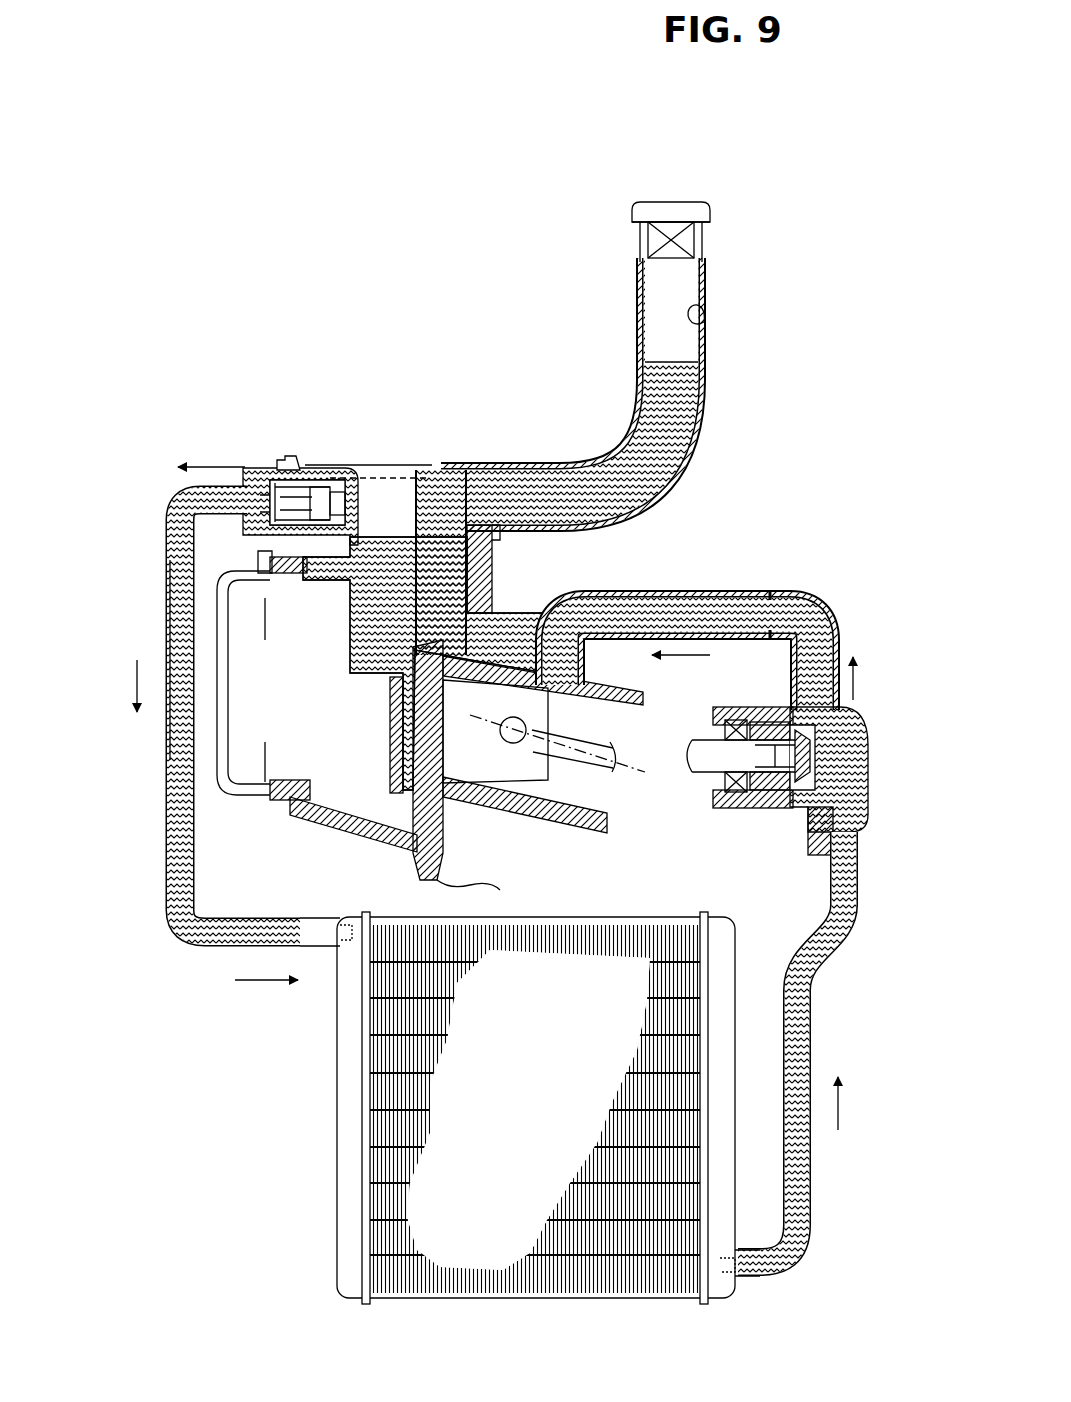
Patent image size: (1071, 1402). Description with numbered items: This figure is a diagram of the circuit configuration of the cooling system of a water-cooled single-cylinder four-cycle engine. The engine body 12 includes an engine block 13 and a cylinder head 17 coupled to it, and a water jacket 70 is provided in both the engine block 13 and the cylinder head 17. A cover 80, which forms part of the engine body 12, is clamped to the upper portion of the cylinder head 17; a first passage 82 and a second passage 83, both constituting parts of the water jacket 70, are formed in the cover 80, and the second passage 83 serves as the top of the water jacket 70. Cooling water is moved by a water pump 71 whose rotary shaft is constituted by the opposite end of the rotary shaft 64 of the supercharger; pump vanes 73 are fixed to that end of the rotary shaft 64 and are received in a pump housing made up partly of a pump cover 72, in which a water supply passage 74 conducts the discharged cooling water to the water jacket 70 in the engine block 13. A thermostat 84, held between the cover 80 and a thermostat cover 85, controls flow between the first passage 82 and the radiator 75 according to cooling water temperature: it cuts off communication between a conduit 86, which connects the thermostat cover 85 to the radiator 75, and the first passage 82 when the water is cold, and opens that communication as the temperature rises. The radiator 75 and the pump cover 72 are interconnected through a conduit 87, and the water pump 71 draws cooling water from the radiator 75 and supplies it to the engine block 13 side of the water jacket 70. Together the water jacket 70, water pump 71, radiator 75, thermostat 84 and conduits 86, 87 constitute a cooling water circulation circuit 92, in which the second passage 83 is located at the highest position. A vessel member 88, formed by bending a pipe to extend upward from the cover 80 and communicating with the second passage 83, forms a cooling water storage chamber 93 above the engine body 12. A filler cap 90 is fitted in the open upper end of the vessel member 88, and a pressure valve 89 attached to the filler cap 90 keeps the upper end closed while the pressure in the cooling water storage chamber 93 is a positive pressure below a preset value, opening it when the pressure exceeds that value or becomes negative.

The engine body 12 is at (306, 806).
The engine block 13 is at (432, 870).
The cylinder head 17 is at (335, 816).
The rotary shaft 64 is at (712, 766).
The water jacket 70 is at (388, 668).
The water pump 71 is at (862, 730).
The pump cover 72 is at (816, 614).
The pump vanes 73 is at (832, 806).
The water supply passage 74 is at (822, 644).
The radiator 75 is at (546, 1122).
The cover 80 is at (383, 493).
The first passage 82 is at (346, 578).
The second passage 83 is at (440, 497).
The thermostat 84 is at (296, 470).
The thermostat cover 85 is at (255, 470).
The conduit 86 is at (166, 864).
The conduit 87 is at (858, 900).
The vessel member 88 is at (708, 412).
The pressure valve 89 is at (655, 238).
The filler cap 90 is at (672, 208).
The cooling water circulation circuit 92 is at (165, 772).
The cooling water storage chamber 93 is at (704, 328).